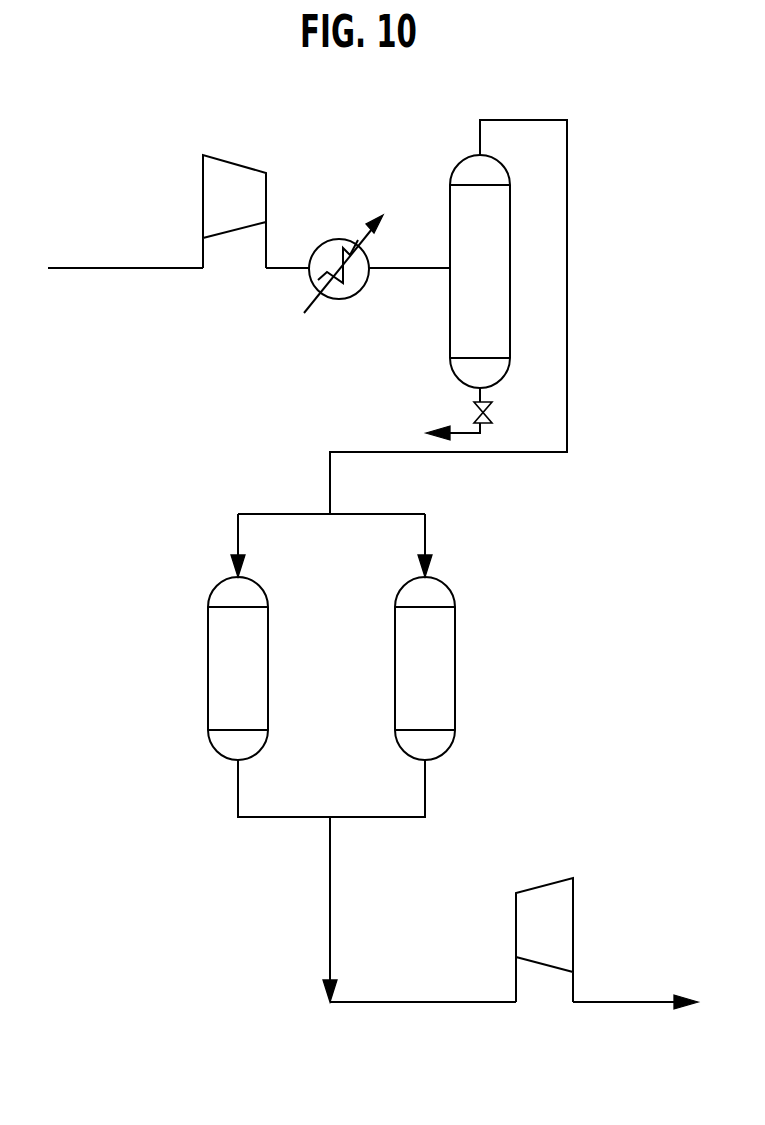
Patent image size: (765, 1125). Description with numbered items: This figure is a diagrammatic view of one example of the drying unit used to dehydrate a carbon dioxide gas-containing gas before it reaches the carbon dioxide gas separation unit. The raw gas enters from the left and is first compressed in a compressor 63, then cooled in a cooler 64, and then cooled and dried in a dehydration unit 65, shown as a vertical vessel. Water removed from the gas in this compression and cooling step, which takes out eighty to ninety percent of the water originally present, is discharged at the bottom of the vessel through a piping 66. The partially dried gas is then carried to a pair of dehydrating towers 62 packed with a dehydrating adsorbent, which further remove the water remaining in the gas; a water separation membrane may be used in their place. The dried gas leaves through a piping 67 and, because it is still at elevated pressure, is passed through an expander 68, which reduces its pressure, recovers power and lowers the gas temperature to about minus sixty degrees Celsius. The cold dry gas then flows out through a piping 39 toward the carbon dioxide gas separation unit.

The compressor 63 is at (203, 178).
The cooler 64 is at (300, 283).
The dehydration unit 65 is at (450, 334).
The piping 66 is at (455, 432).
The dehydrating towers 62 is at (456, 668).
The piping 67 is at (330, 902).
The expander 68 is at (541, 888).
The piping 39 is at (638, 1003).